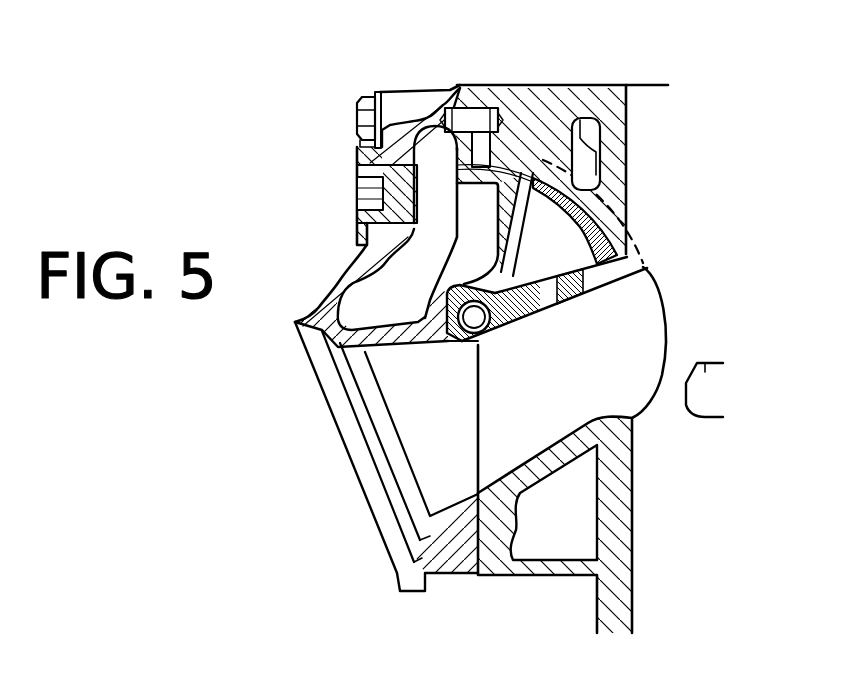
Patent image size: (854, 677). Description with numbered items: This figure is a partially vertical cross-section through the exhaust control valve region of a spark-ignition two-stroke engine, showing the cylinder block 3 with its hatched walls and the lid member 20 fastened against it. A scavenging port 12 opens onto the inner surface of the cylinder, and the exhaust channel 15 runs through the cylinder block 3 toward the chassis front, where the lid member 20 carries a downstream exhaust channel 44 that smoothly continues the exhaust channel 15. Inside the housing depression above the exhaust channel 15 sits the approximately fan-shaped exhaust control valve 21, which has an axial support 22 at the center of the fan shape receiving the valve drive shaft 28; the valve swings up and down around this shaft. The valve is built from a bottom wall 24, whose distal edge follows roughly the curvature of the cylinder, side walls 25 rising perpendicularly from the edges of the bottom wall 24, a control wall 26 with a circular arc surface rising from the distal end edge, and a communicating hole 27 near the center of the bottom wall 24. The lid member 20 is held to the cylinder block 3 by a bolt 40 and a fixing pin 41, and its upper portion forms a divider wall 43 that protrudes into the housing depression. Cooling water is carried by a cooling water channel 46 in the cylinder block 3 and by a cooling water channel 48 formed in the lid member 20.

The cylinder block 3 is at (581, 80).
The scavenging port 12 is at (708, 363).
The exhaust channel 15 is at (570, 425).
The lid member 20 is at (428, 91).
The exhaust control valve 21 is at (463, 341).
The axial support 22 is at (476, 323).
The bottom wall 24 is at (520, 299).
The side walls 25 is at (572, 260).
The control wall 26 is at (578, 222).
The communicating hole 27 is at (557, 290).
The valve drive shaft 28 is at (455, 360).
The bolt 40 is at (366, 120).
The fixing pin 41 is at (479, 112).
The divider wall 43 is at (479, 233).
The downstream exhaust channel 44 is at (463, 465).
The cooling water channel 46 is at (583, 530).
The cooling water channel 48 is at (418, 300).